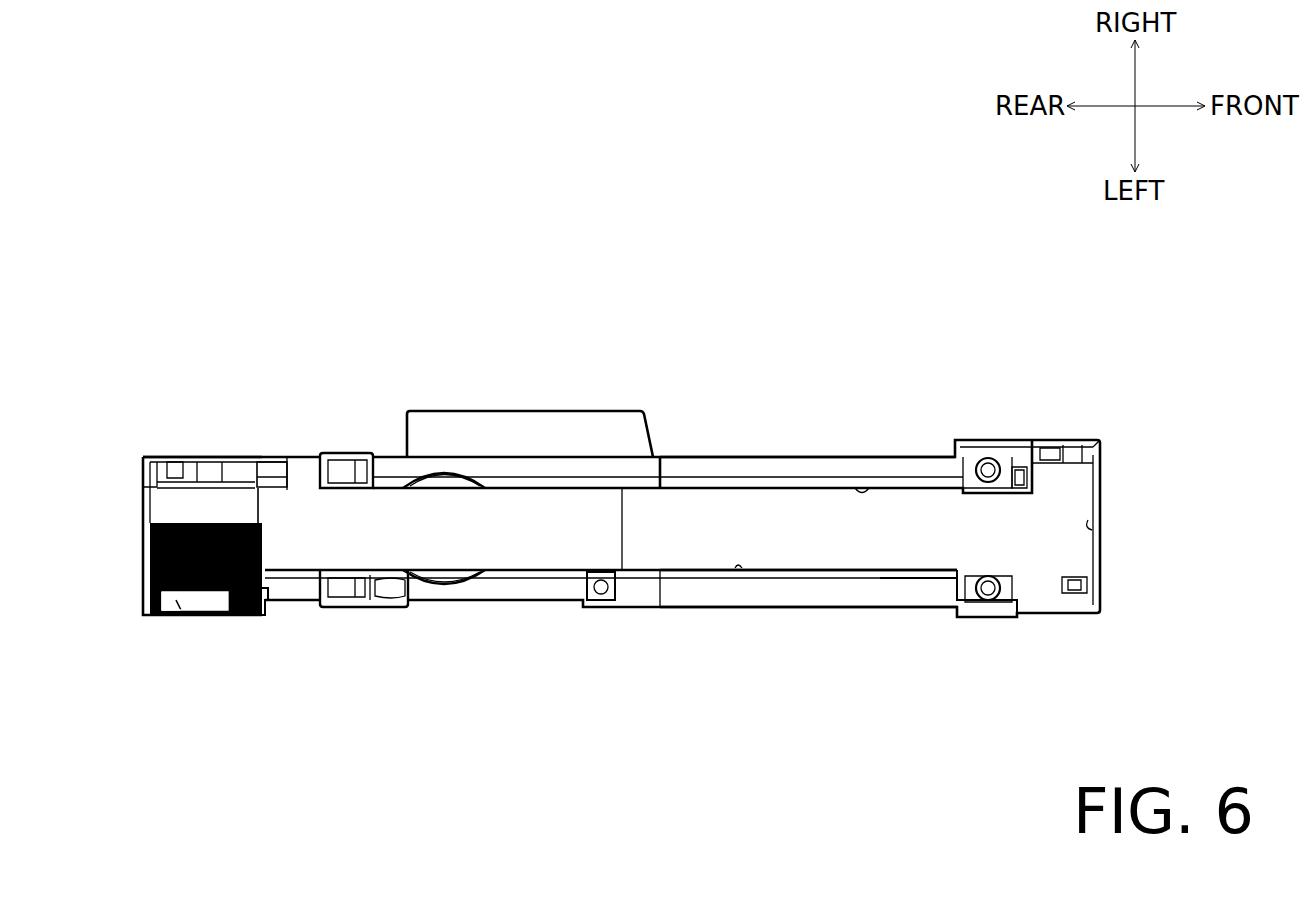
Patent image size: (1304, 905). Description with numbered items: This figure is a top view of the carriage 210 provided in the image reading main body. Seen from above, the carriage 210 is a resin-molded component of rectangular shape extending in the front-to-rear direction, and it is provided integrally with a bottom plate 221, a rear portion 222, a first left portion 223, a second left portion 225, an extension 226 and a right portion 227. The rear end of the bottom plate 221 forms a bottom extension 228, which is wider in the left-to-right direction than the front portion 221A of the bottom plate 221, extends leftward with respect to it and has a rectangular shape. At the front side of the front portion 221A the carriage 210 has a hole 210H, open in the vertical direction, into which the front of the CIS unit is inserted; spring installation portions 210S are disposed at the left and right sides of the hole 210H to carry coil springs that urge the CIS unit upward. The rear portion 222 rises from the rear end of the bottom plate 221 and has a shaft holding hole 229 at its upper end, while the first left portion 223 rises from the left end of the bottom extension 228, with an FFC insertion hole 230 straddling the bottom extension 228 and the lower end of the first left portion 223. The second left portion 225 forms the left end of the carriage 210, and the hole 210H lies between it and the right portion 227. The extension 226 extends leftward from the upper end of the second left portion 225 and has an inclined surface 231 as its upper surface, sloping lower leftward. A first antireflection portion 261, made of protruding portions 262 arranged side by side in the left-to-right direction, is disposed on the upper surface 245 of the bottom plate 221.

The carriage 210 is at (757, 636).
The hole 210H is at (862, 490).
The spring installation portions 210S is at (987, 466).
The bottom plate 221 is at (540, 506).
The front portion of the bottom plate 221A is at (368, 520).
The rear portion 222 is at (140, 512).
The first left portion 223 is at (205, 617).
The second left portion 225 is at (683, 568).
The extension 226 is at (851, 609).
The right portion 227 is at (710, 457).
The bottom extension 228 is at (269, 598).
The shaft holding hole 229 is at (143, 460).
The FFC insertion hole 230 is at (180, 616).
The inclined surface 231 is at (912, 592).
The upper surface 245 is at (235, 498).
The first antireflection portion 261 is at (200, 521).
The protruding portions 262 is at (242, 522).